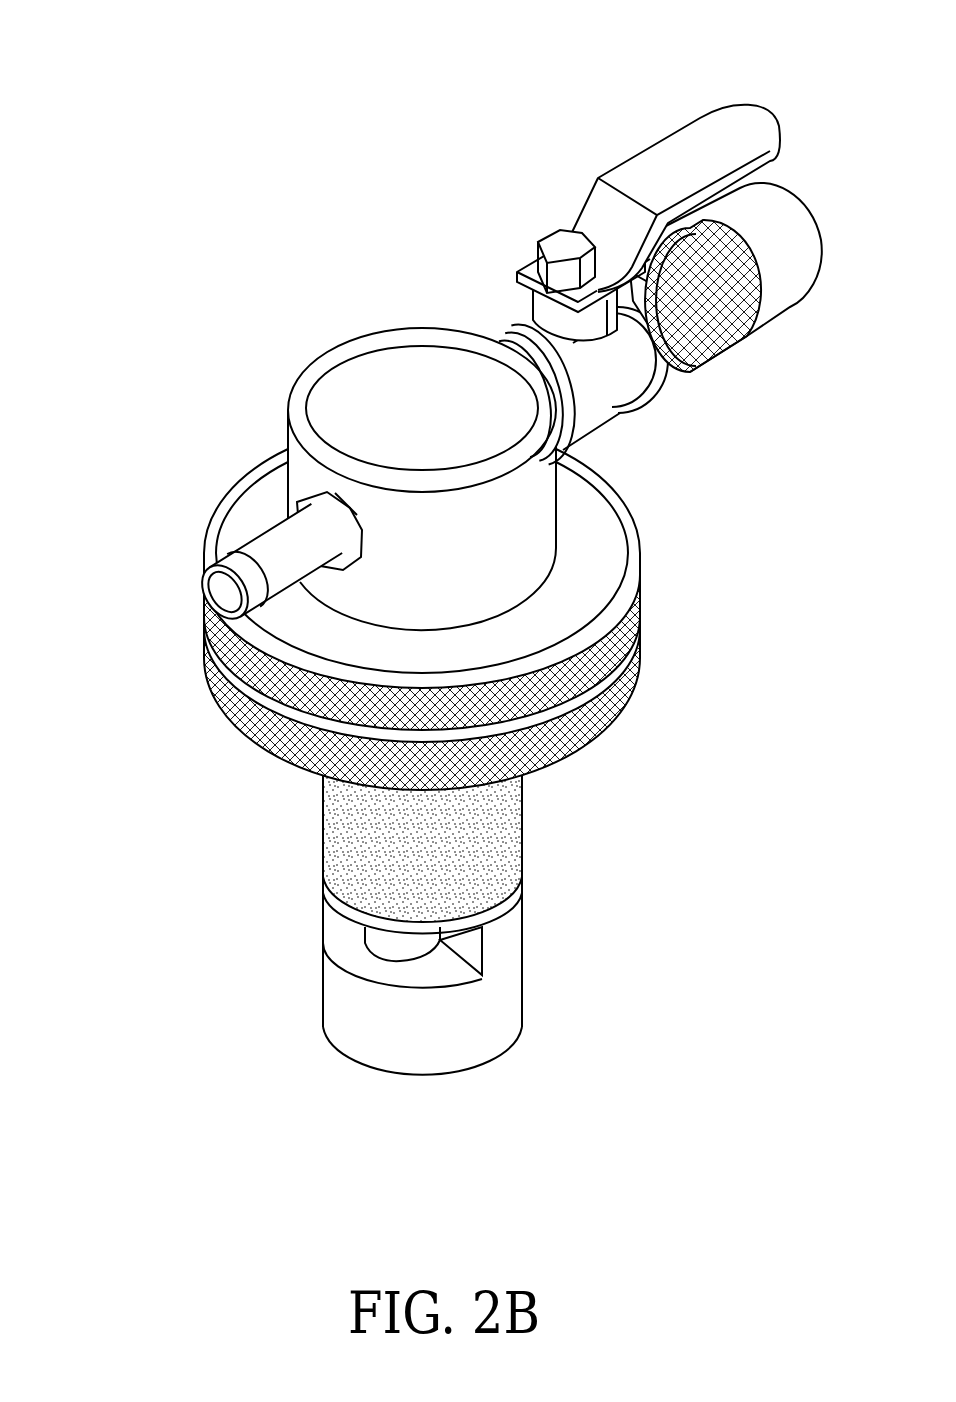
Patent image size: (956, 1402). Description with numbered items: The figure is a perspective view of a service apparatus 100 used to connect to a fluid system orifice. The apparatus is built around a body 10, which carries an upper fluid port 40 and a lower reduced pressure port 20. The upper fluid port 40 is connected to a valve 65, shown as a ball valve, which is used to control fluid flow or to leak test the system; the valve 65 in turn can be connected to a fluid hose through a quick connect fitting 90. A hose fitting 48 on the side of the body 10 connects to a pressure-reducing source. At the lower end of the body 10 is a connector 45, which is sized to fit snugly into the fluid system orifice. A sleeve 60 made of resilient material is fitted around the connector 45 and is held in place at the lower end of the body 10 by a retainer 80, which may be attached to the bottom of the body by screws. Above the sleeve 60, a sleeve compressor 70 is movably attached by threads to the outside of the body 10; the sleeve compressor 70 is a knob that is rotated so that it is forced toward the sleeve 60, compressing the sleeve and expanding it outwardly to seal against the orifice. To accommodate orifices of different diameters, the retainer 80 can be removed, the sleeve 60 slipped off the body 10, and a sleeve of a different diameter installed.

The service apparatus 100 is at (441, 119).
The body 10 is at (377, 347).
The lower reduced pressure port 20 is at (353, 937).
The upper fluid port 40 is at (632, 287).
The connector 45 is at (522, 900).
The hose fitting 48 is at (273, 543).
The sleeve 60 is at (515, 821).
The valve 65 is at (560, 240).
The sleeve compressor 70 is at (215, 662).
The retainer 80 is at (490, 1040).
The quick connect fitting 90 is at (727, 350).